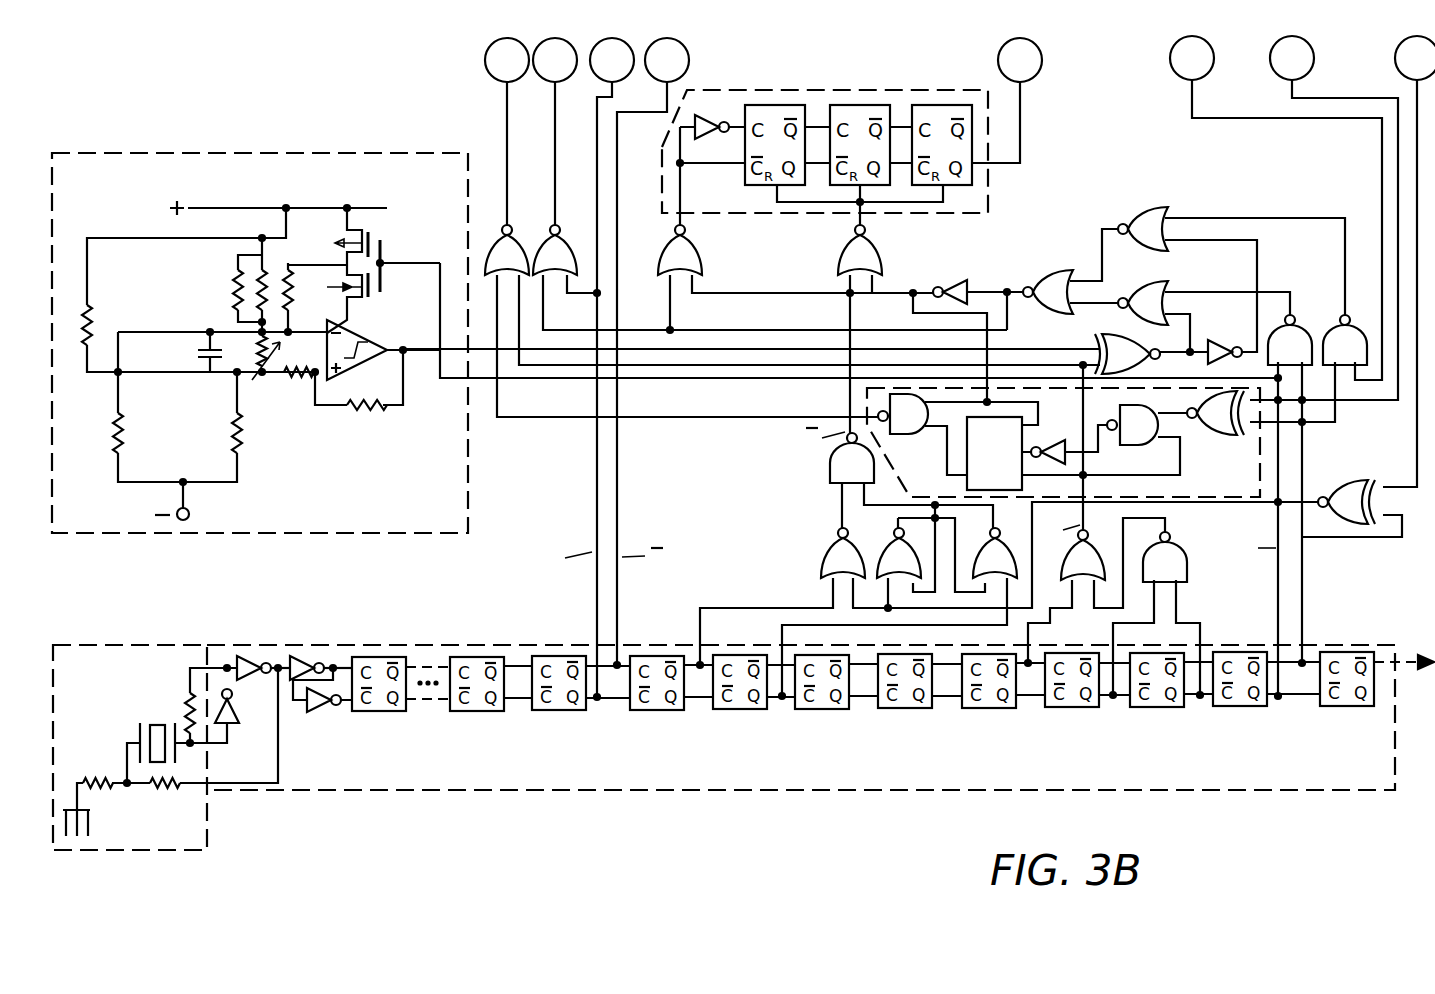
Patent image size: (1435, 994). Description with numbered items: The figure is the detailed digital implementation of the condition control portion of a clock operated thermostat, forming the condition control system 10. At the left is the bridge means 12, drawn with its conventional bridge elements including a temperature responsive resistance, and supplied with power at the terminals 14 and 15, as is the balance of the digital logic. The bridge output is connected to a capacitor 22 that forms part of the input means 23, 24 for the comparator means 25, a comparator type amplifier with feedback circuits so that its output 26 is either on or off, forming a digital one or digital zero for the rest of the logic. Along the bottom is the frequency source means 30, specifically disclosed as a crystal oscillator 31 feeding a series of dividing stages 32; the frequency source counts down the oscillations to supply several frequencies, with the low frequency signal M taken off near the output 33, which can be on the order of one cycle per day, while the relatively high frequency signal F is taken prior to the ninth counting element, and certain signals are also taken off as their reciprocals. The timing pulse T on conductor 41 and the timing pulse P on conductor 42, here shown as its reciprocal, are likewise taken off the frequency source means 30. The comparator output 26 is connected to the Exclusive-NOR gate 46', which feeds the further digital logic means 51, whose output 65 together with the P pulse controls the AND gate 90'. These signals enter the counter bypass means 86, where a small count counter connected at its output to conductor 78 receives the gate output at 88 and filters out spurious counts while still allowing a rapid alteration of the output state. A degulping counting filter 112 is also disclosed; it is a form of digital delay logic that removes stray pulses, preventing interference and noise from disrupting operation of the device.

The condition control system 10 is at (714, 476).
The bridge means 12 is at (356, 453).
The power supply terminal 14 is at (247, 207).
The power supply terminal 15 is at (190, 511).
The capacitor 22 is at (197, 356).
The input means 23 is at (327, 368).
The input means 24 is at (347, 292).
The comparator means 25 is at (355, 314).
The comparator output 26 is at (412, 356).
The frequency source means 30 is at (863, 790).
The crystal oscillator 31 is at (172, 826).
The dividing stages 32 is at (778, 754).
The frequency source output 33 is at (1422, 655).
The conductor 41 is at (536, 368).
The conductor 42 is at (850, 313).
The Exclusive-NOR gate 46' is at (1107, 347).
The further digital logic means 51 is at (1314, 262).
The output of further digital logic means 65 is at (980, 288).
The conductor 78 is at (1023, 118).
The counter bypass means 86 is at (798, 88).
The AND gate output 88 is at (683, 192).
The AND gate 90' is at (795, 277).
The degulping counting filter 112 is at (1262, 457).